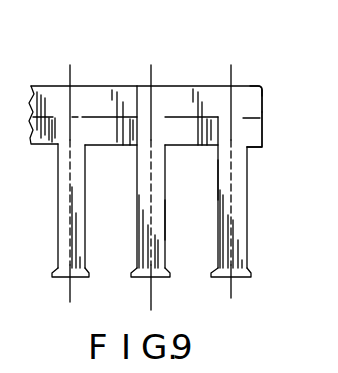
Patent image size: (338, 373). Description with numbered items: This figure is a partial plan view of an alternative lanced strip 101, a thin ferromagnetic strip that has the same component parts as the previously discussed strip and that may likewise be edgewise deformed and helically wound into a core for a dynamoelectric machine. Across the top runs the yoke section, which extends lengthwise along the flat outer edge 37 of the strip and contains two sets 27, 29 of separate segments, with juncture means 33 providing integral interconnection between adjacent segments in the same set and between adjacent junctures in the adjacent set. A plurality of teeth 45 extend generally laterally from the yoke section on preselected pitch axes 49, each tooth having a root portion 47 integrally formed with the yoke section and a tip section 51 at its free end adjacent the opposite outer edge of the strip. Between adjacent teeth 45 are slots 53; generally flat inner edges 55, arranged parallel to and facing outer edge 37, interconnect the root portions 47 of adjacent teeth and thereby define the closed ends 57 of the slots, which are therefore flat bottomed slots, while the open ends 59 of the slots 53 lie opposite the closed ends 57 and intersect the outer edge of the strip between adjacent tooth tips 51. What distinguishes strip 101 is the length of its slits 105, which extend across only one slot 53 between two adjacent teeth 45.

The lanced strip 101 is at (298, 50).
The juncture means 33 is at (60, 100).
The slits 105 is at (107, 117).
The outer edge 37 is at (250, 86).
The segment set 27 is at (257, 95).
The segment set 29 is at (257, 130).
The root portions 47 is at (62, 150).
The teeth 45 is at (238, 212).
The inner edges 55 is at (188, 146).
The closed ends 57 is at (208, 178).
The slots 53 is at (203, 233).
The tip sections 51 is at (63, 277).
The open ends 59 is at (170, 258).
The pitch axes 49 is at (72, 302).